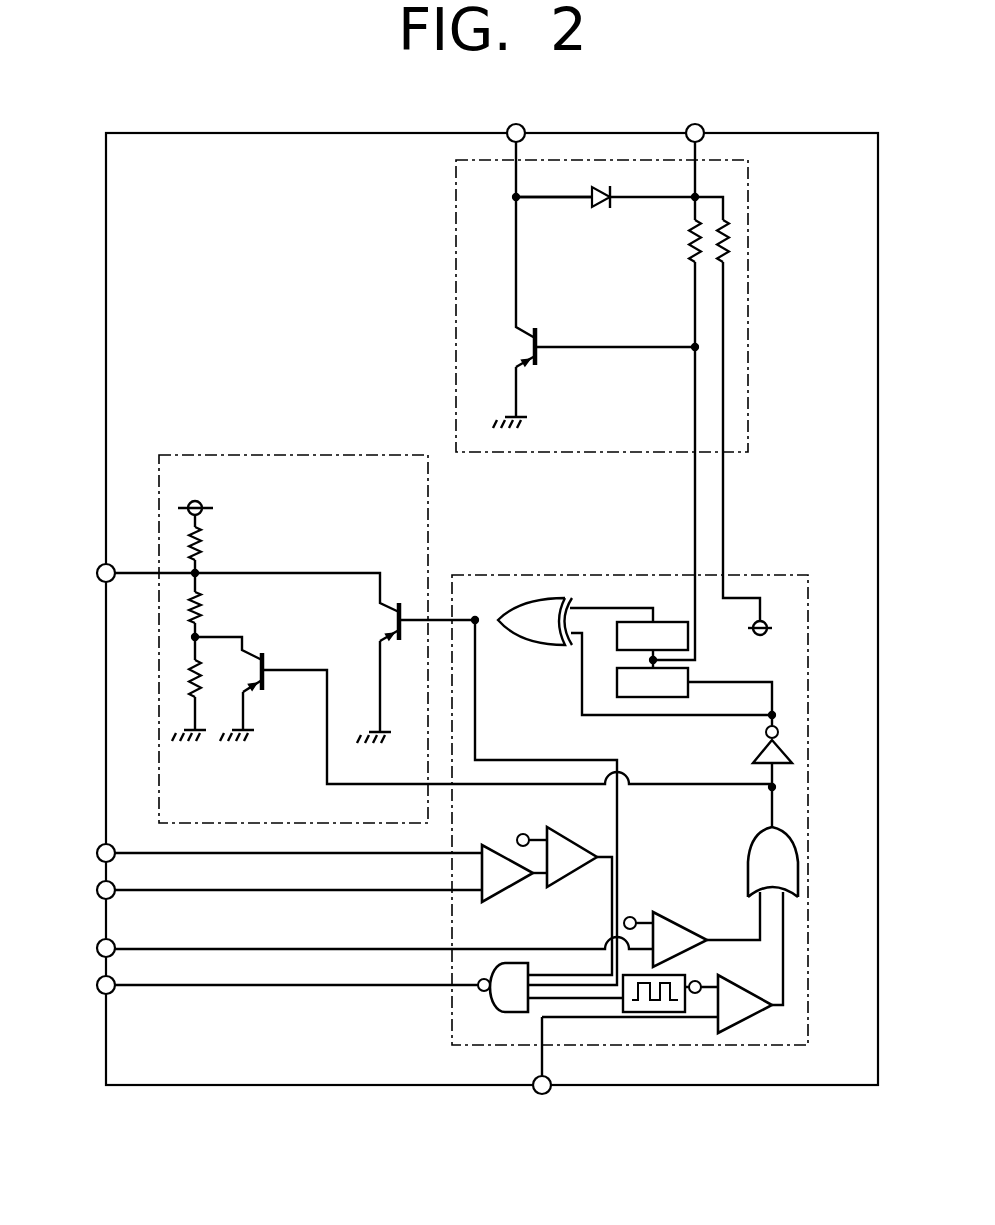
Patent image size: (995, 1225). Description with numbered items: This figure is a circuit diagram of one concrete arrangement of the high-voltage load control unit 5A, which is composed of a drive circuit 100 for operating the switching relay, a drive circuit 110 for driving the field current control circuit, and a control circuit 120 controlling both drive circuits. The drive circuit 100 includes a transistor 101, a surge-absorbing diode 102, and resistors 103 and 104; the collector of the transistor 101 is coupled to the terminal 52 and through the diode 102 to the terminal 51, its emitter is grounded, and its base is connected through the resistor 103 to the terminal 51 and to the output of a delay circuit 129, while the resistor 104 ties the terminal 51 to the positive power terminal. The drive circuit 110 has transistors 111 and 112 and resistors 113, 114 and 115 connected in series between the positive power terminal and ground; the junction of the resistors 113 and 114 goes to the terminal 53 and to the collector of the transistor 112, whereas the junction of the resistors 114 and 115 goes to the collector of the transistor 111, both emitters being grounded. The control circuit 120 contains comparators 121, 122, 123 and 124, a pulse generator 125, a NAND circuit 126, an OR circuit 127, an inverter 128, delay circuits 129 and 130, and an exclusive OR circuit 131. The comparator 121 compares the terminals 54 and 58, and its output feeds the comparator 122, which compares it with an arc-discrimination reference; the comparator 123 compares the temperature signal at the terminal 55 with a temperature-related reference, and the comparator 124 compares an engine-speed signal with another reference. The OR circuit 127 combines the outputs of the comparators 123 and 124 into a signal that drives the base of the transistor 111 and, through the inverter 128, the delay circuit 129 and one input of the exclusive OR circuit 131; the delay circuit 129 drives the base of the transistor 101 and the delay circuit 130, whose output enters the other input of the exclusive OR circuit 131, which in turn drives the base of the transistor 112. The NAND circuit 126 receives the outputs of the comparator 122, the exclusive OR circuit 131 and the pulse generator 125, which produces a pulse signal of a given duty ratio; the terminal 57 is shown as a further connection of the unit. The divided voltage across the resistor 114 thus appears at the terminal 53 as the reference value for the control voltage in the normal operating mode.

The high-voltage load control unit 5A is at (339, 133).
The terminal 51 is at (692, 124).
The terminal 52 is at (513, 124).
The terminal 53 is at (98, 566).
The terminal 54 is at (97, 886).
The terminal 55 is at (97, 944).
The output terminal 57 is at (97, 981).
The terminal 58 is at (97, 849).
The drive circuit 100 is at (640, 403).
The transistor 101 is at (540, 340).
The surge-absorbing diode 102 is at (596, 208).
The resistor 103 is at (688, 238).
The resistor 104 is at (730, 248).
The drive circuit 110 is at (440, 601).
The transistor 111 is at (268, 655).
The transistor 112 is at (398, 598).
The resistor 113 is at (200, 545).
The resistor 114 is at (200, 605).
The resistor 115 is at (210, 710).
The control circuit 120 is at (495, 821).
The comparator 121 is at (512, 893).
The comparator 122 is at (576, 838).
The comparator 123 is at (682, 913).
The comparator 124 is at (740, 1028).
The pulse generator 125 is at (652, 1013).
The NAND circuit 126 is at (505, 1013).
The OR circuit 127 is at (798, 861).
The inverter 128 is at (785, 747).
The delay circuit 129 is at (665, 698).
The delay circuit 130 is at (662, 620).
The exclusive OR circuit 131 is at (528, 646).